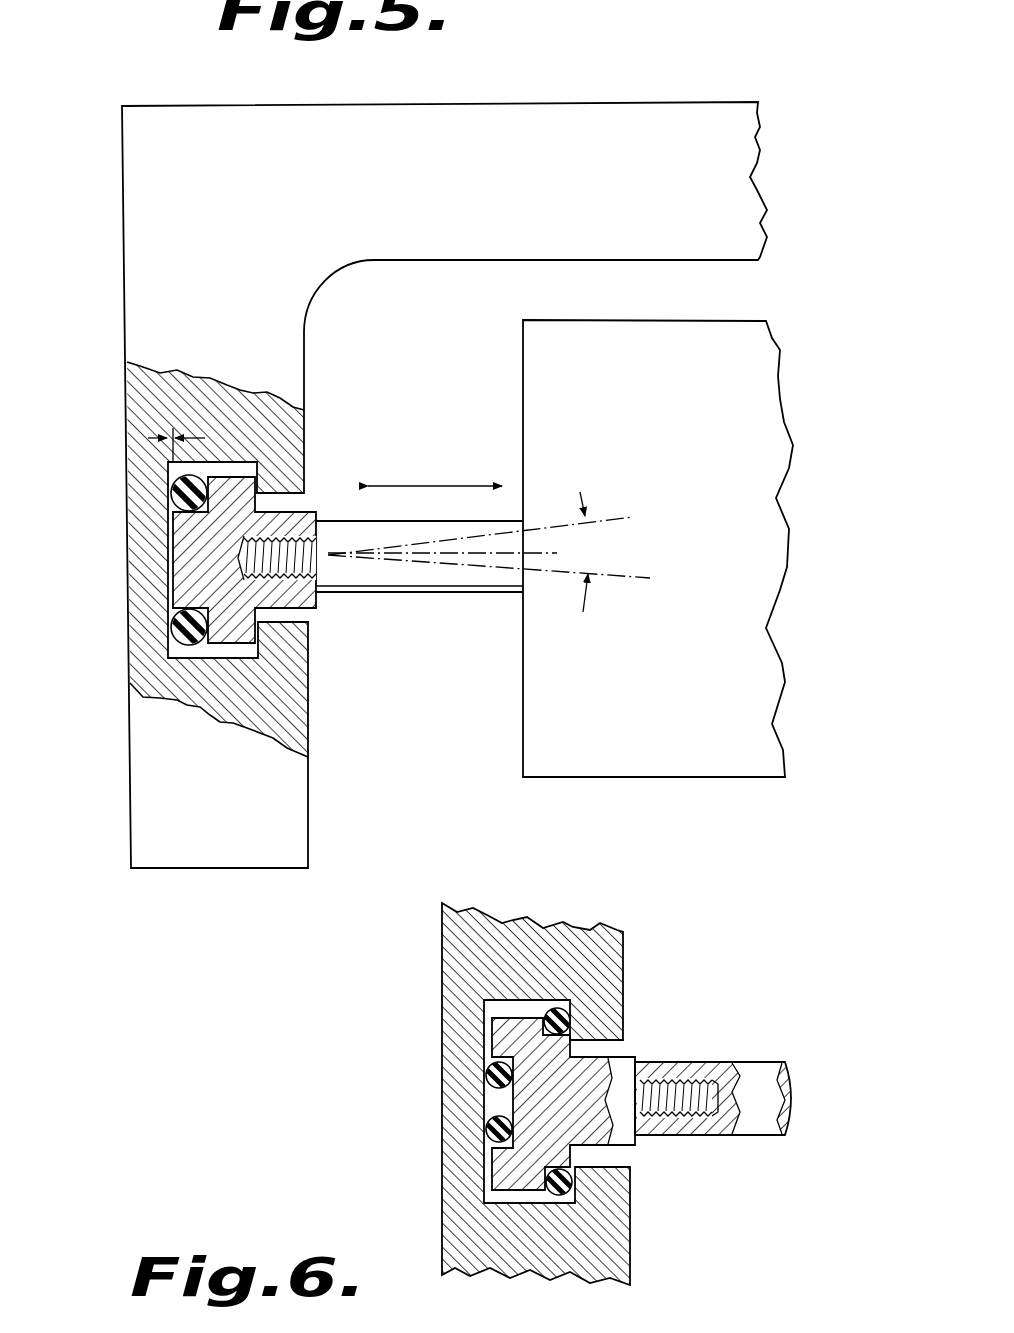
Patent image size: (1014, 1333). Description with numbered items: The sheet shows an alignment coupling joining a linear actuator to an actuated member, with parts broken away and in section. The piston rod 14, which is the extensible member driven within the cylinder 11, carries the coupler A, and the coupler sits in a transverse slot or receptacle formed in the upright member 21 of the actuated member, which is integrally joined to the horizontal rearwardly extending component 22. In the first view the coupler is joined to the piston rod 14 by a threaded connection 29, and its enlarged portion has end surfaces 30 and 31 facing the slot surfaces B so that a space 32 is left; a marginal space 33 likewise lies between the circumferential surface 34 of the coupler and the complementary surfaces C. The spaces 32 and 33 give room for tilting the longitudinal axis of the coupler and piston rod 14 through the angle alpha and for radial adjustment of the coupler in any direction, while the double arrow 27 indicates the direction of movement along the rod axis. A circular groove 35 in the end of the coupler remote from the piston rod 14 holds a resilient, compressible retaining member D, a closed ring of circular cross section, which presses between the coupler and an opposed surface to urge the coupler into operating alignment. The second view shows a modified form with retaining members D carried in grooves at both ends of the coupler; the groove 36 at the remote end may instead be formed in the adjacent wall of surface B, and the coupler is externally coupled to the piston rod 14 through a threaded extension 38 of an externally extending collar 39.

In FIG. 5, the cylinder 11 is at (748, 726).
In FIG. 5, the piston rod 14 is at (473, 590).
In FIG. 6, the piston rod 14 is at (713, 1067).
In FIG. 5, the upright member 21 is at (225, 855).
In FIG. 6, the upright member 21 is at (625, 1218).
In FIG. 5, the horizontal rearwardly extending component 22 is at (568, 118).
In FIG. 5, the direction of movement 27 is at (292, 500).
In FIG. 5, the threaded connection 29 is at (312, 612).
In FIG. 5, the end surface 30 is at (227, 565).
In FIG. 5, the end surface 31 is at (310, 660).
In FIG. 5, the space 32 is at (172, 428).
In FIG. 5, the marginal space 33 is at (243, 460).
In FIG. 5, the circumferential surface 34 is at (252, 470).
In FIG. 5, the circular groove 35 is at (207, 630).
In FIG. 6, the groove 36 is at (487, 1100).
In FIG. 6, the threaded extension 38 is at (697, 1080).
In FIG. 6, the externally extending collar 39 is at (602, 1050).